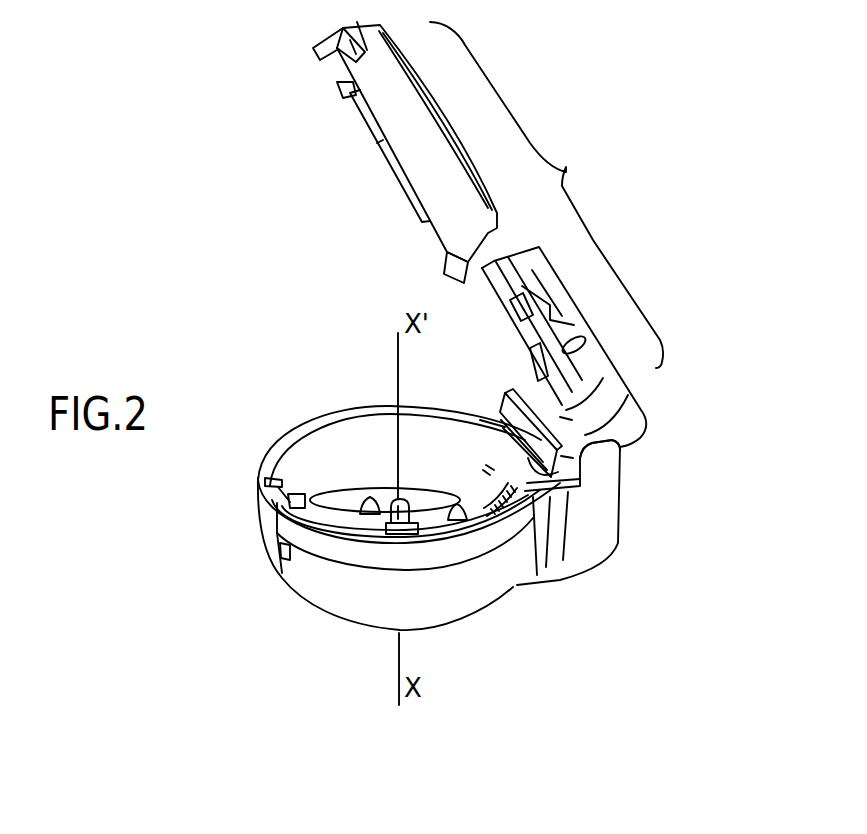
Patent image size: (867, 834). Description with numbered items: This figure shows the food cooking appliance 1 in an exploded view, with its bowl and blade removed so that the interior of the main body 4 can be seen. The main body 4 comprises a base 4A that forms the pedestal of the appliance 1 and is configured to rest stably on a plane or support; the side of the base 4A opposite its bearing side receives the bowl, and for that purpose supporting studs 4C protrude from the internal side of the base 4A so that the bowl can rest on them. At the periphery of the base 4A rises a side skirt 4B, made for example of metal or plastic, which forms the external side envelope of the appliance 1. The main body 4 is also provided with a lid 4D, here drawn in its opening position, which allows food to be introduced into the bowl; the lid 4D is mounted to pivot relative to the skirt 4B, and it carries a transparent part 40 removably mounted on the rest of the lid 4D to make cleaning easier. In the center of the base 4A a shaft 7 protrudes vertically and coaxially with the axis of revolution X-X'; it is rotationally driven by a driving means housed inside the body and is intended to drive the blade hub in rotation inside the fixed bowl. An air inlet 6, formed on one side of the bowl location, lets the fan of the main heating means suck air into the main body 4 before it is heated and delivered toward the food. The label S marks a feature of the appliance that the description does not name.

The food cooking appliance 1 is at (641, 242).
The transparent part 40 is at (390, 103).
The lid 4D is at (546, 234).
The main body 4 is at (317, 577).
The base 4A is at (373, 627).
The side skirt 4B is at (513, 588).
The supporting studs 4C is at (364, 500).
The shaft 7 is at (393, 498).
The air inlet 6 is at (484, 510).
The notch / seat S is at (632, 453).